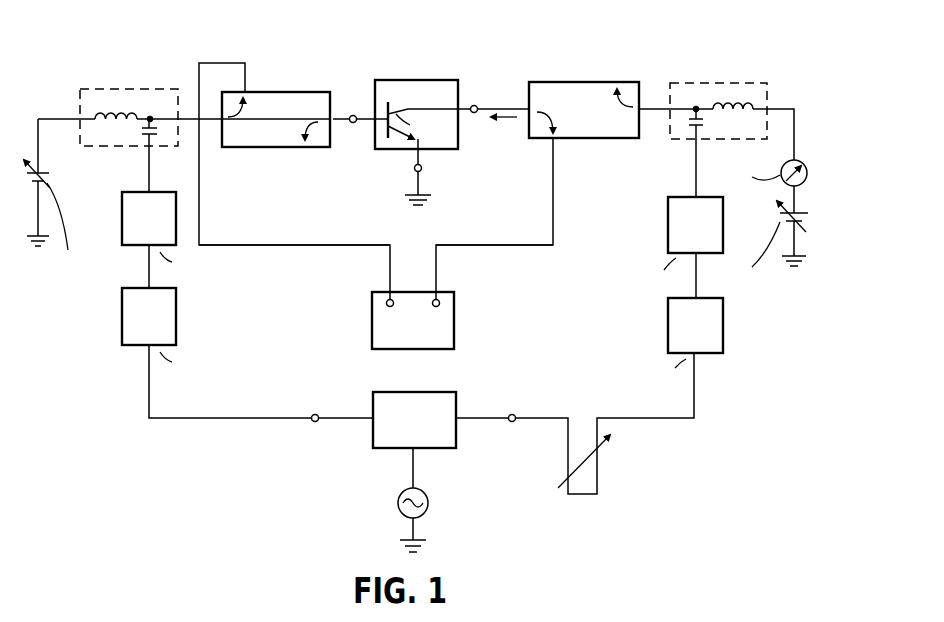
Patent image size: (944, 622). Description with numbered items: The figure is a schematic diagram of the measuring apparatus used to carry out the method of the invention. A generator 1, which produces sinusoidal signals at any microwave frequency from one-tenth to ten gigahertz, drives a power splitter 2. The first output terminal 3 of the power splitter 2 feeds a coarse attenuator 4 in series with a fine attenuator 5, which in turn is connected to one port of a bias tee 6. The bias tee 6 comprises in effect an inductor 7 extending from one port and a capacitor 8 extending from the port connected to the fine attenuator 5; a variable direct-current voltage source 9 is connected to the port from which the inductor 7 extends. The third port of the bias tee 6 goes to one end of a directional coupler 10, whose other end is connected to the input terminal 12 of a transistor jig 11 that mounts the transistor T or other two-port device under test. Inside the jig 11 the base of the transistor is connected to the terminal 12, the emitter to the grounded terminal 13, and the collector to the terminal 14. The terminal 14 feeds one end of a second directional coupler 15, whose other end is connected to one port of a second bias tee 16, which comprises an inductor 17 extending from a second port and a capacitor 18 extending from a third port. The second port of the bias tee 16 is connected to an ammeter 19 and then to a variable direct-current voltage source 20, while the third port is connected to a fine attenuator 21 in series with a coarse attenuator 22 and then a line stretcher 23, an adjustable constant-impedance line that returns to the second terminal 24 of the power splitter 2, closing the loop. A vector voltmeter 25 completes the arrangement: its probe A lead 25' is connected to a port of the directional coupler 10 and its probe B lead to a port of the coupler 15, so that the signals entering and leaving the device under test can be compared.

The generator 1 is at (398, 507).
The power splitter 2 is at (393, 440).
The first output terminal 3 is at (316, 423).
The coarse attenuator 4 is at (135, 340).
The fine attenuator 5 is at (124, 214).
The bias tee 6 is at (110, 150).
The inductor 7 is at (106, 116).
The capacitor 8 is at (151, 138).
The variable direct-current voltage source 9 is at (35, 176).
The directional coupler 10 is at (287, 147).
The transistor jig 11 is at (455, 145).
The input terminal 12 is at (358, 123).
The grounded terminal 13 is at (413, 168).
The terminal 14 is at (474, 105).
The directional coupler 15 is at (620, 138).
The bias tee 16 is at (684, 140).
The inductor 17 is at (755, 108).
The capacitor 18 is at (698, 124).
The ammeter 19 is at (806, 166).
The variable direct-current voltage source 20 is at (800, 211).
The fine attenuator 21 is at (670, 223).
The coarse attenuator 22 is at (716, 352).
The line stretcher 23 is at (572, 497).
The second terminal 24 is at (512, 423).
The vector voltmeter 25 is at (471, 320).
The probe A lead 25' is at (294, 230).